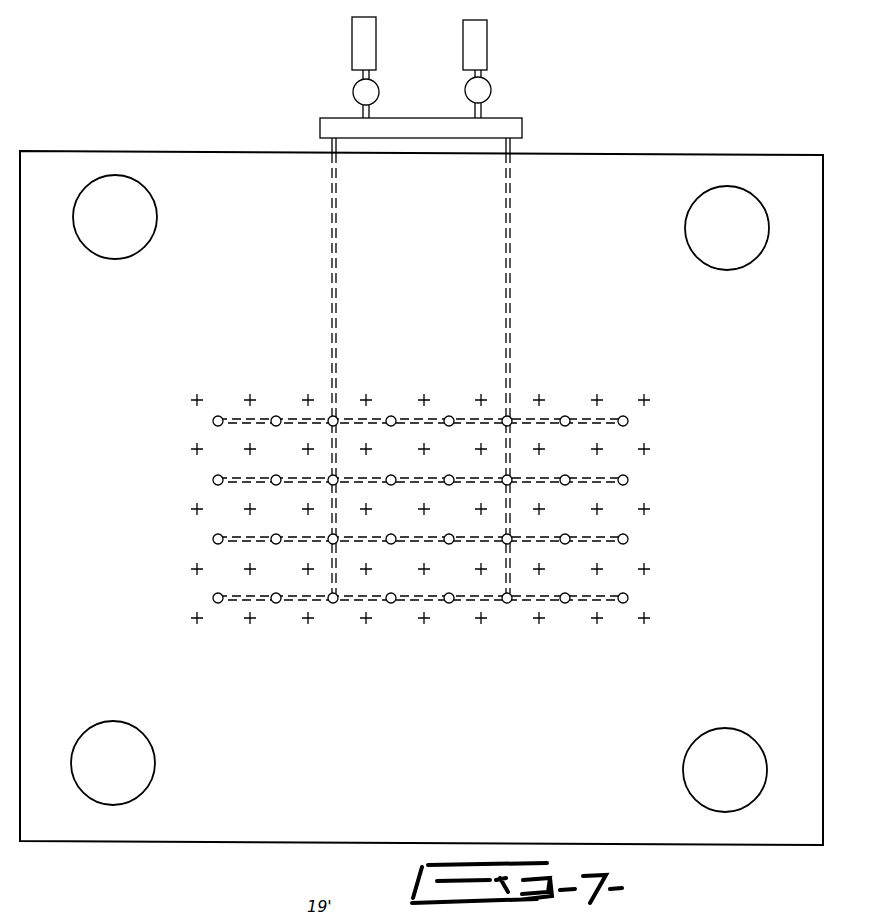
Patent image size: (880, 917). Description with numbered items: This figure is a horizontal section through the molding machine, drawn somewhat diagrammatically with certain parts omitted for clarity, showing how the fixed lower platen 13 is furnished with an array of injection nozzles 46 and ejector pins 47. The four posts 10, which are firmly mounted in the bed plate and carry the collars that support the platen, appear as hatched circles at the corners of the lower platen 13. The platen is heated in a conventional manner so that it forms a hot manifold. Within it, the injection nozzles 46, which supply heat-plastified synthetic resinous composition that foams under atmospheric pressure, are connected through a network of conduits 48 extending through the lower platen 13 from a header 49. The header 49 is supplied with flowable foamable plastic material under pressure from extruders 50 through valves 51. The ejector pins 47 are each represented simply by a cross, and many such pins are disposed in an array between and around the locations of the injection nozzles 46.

The posts 10 is at (128, 190).
The lower platen 13 is at (578, 167).
The injection nozzles 46 is at (274, 475).
The ejector pins 47 is at (306, 396).
The conduits 48 is at (335, 313).
The header 49 is at (418, 112).
The extruders 50 is at (467, 37).
The valves 51 is at (466, 88).